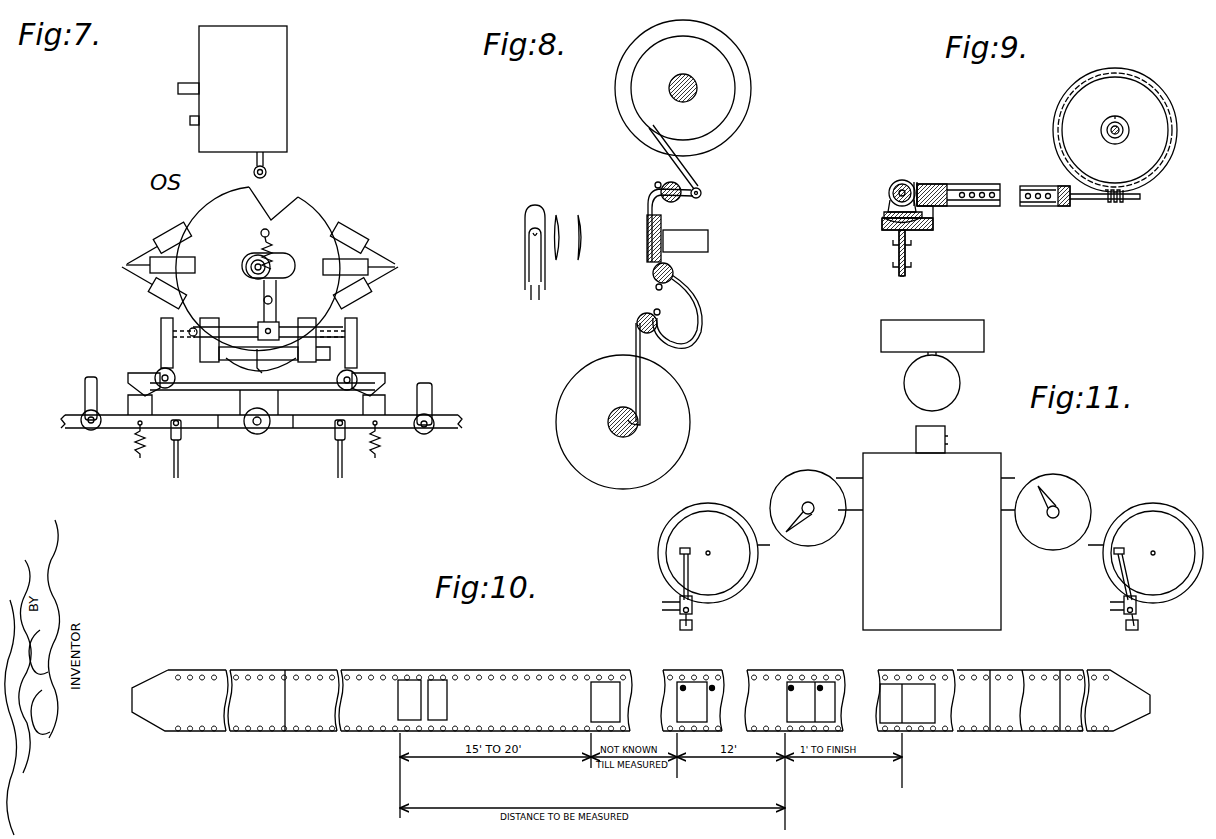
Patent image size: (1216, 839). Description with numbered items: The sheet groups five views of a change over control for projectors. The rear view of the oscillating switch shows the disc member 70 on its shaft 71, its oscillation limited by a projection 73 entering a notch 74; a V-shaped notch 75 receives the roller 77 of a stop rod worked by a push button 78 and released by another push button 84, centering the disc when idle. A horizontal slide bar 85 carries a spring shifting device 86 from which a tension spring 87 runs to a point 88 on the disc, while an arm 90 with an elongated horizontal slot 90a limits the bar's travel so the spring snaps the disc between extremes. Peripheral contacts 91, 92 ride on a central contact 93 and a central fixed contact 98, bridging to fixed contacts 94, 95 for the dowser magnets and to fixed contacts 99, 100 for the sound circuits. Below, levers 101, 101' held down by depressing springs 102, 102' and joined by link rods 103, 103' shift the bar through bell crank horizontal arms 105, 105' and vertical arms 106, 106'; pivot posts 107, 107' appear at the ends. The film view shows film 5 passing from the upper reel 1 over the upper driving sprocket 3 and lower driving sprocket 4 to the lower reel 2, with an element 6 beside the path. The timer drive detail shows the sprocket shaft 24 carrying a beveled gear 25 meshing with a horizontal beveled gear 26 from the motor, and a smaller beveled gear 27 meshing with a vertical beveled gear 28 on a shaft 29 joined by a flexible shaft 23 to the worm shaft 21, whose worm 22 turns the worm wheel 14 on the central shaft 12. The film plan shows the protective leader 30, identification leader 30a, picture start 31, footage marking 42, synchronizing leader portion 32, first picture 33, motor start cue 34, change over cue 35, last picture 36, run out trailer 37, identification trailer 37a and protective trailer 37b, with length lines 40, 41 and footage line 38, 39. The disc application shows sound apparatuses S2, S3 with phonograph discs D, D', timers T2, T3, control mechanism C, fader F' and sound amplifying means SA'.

In FIG. 7, the push button 84 is at (184, 84).
In FIG. 7, the push button 78 is at (190, 121).
In FIG. 7, the roller 77 is at (270, 165).
In FIG. 7, the V-shaped notch 75 is at (269, 194).
In FIG. 7, the oscillating switch disc member 70 is at (302, 213).
In FIG. 7, the spring connection point 88 is at (268, 231).
In FIG. 7, the tension spring 87 is at (271, 243).
In FIG. 7, the shaft 71 is at (250, 258).
In FIG. 7, the elongated horizontal slot 90a is at (283, 262).
In FIG. 7, the arm 90 is at (277, 292).
In FIG. 7, the spring shifting device 86 is at (263, 299).
In FIG. 7, the contact 92 is at (190, 264).
In FIG. 7, the central fixed contact 98 is at (136, 251).
In FIG. 7, the fixed contact 99 is at (153, 287).
In FIG. 7, the fixed contact 100 is at (167, 229).
In FIG. 7, the fixed contact 95 is at (358, 230).
In FIG. 7, the central contact 93 is at (372, 260).
In FIG. 7, the fixed contact 94 is at (366, 296).
In FIG. 7, the contact 91 is at (324, 277).
In FIG. 7, the vertical arm 106 is at (161, 343).
In FIG. 7, the vertical arm 106' is at (361, 343).
In FIG. 7, the notch 74 is at (236, 352).
In FIG. 7, the projection 73 is at (261, 366).
In FIG. 7, the horizontal slide bar 85 is at (327, 351).
In FIG. 7, the horizontal arm 105 is at (143, 371).
In FIG. 7, the horizontal arm 105' is at (377, 371).
In FIG. 7, the pivot post 107' is at (70, 403).
In FIG. 7, the pivot post 107 is at (444, 408).
In FIG. 7, the lever 101' is at (209, 440).
In FIG. 7, the lever 101 is at (298, 440).
In FIG. 7, the depressing spring 102' is at (123, 453).
In FIG. 7, the depressing spring 102 is at (398, 445).
In FIG. 7, the link rod 103' is at (198, 453).
In FIG. 7, the link rod 103 is at (324, 462).
In FIG. 8, the upper reel 1 is at (745, 60).
In FIG. 8, the film 5 is at (700, 178).
In FIG. 8, the shaft of the film feed sprocket 24 is at (661, 184).
In FIG. 9, the shaft of the film feed sprocket 24 is at (898, 249).
In FIG. 8, the upper driving sprocket 3 is at (681, 198).
In FIG. 9, the upper driving sprocket 3 is at (911, 258).
In FIG. 8, the needle 6 is at (538, 207).
In FIG. 8, the lower driving sprocket 4 is at (651, 333).
In FIG. 8, the lower reel 2 is at (690, 422).
In FIG. 9, the worm wheel 14 is at (1145, 96).
In FIG. 9, the central shaft 12 is at (1128, 128).
In FIG. 9, the horizontal beveled gear 26 is at (896, 181).
In FIG. 9, the vertical beveled gear 28 is at (915, 182).
In FIG. 9, the shaft 29 is at (938, 194).
In FIG. 9, the smaller beveled gear 27 is at (889, 193).
In FIG. 9, the beveled gear 25 is at (884, 213).
In FIG. 9, the flexible shaft 23 is at (1040, 204).
In FIG. 9, the worm 22 is at (1116, 204).
In FIG. 9, the worm shaft 21 is at (1143, 200).
In FIG. 11, the sound amplifying means SA' is at (932, 336).
In FIG. 11, the fader F' is at (932, 381).
In FIG. 11, the control mechanism C is at (932, 528).
In FIG. 11, the phonograph disc D is at (699, 553).
In FIG. 11, the timer T2 is at (808, 523).
In FIG. 11, the timer T3 is at (1053, 525).
In FIG. 11, the phonograph disc D' is at (1153, 542).
In FIG. 11, the sound apparatus S2 is at (710, 589).
In FIG. 11, the sound apparatus S3 is at (1145, 589).
In FIG. 10, the protective leader 30 is at (210, 654).
In FIG. 10, the identification leader 30a is at (313, 700).
In FIG. 10, the picture start 31 is at (400, 705).
In FIG. 10, the synchronizing leader portion 32 is at (485, 700).
In FIG. 10, the footage marking 42 is at (445, 676).
In FIG. 10, the first picture 33 is at (596, 694).
In FIG. 10, the motor start cue 34 is at (688, 688).
In FIG. 10, the change over cue 35 is at (794, 688).
In FIG. 10, the last picture 36 is at (908, 694).
In FIG. 10, the run out trailer 37 is at (972, 716).
In FIG. 10, the identification trailer 37a is at (1043, 716).
In FIG. 10, the protective trailer 37b is at (1112, 688).
In FIG. 10, the footage line end 38 is at (592, 821).
In FIG. 10, the footage line end 39 is at (772, 783).
In FIG. 10, the length line end 40 is at (495, 775).
In FIG. 10, the length line end 41 is at (843, 760).